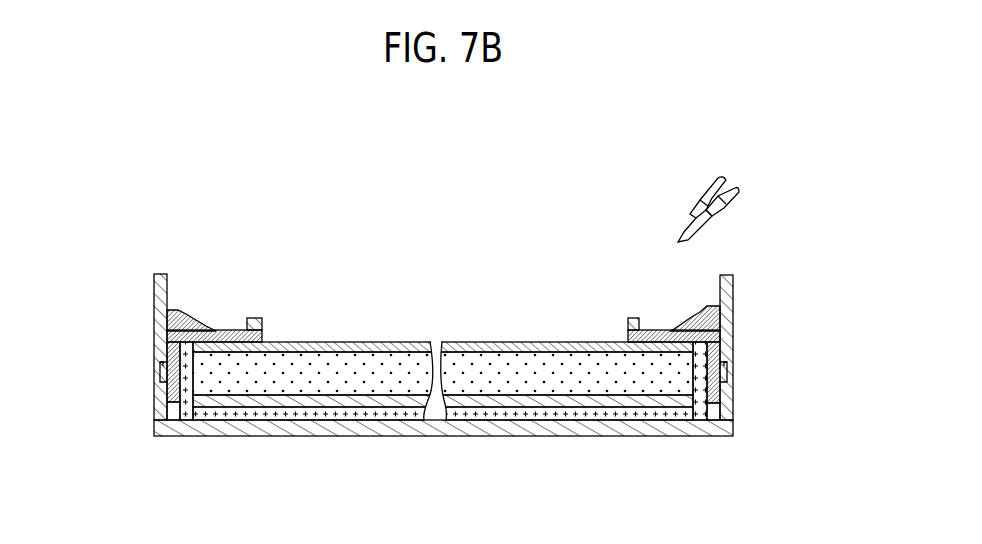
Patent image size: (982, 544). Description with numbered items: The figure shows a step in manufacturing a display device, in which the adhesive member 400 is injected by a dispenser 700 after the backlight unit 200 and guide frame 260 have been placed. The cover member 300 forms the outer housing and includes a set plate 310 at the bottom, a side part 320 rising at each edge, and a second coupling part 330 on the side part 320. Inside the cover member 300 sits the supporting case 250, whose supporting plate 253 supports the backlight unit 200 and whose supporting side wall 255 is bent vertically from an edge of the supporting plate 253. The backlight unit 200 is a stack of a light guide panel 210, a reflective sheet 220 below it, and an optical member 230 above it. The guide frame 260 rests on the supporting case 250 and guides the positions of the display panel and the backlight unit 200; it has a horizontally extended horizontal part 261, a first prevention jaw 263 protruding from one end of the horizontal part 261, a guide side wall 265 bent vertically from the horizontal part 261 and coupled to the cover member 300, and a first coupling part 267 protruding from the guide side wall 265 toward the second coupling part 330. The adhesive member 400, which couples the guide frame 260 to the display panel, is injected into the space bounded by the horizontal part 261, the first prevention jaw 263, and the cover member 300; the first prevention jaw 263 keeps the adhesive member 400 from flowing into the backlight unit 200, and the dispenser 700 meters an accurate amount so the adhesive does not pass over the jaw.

The backlight unit 200 is at (443, 435).
The light guide panel 210 is at (395, 380).
The reflective sheet 220 is at (421, 398).
The optical member 230 is at (363, 347).
The supporting case 250 is at (443, 435).
The supporting plate 253 is at (251, 412).
The supporting side wall 255 is at (212, 421).
The guide frame 260 is at (386, 369).
The horizontal part 261 is at (175, 347).
The first prevention jaw 263 is at (168, 336).
The guide side wall 265 is at (168, 366).
The first coupling part 267 is at (129, 381).
The cover member 300 is at (487, 372).
The set plate 310 is at (700, 433).
The side part 320 is at (728, 410).
The second coupling part 330 is at (465, 387).
The adhesive member 400 is at (699, 308).
The dispenser 700 is at (703, 222).